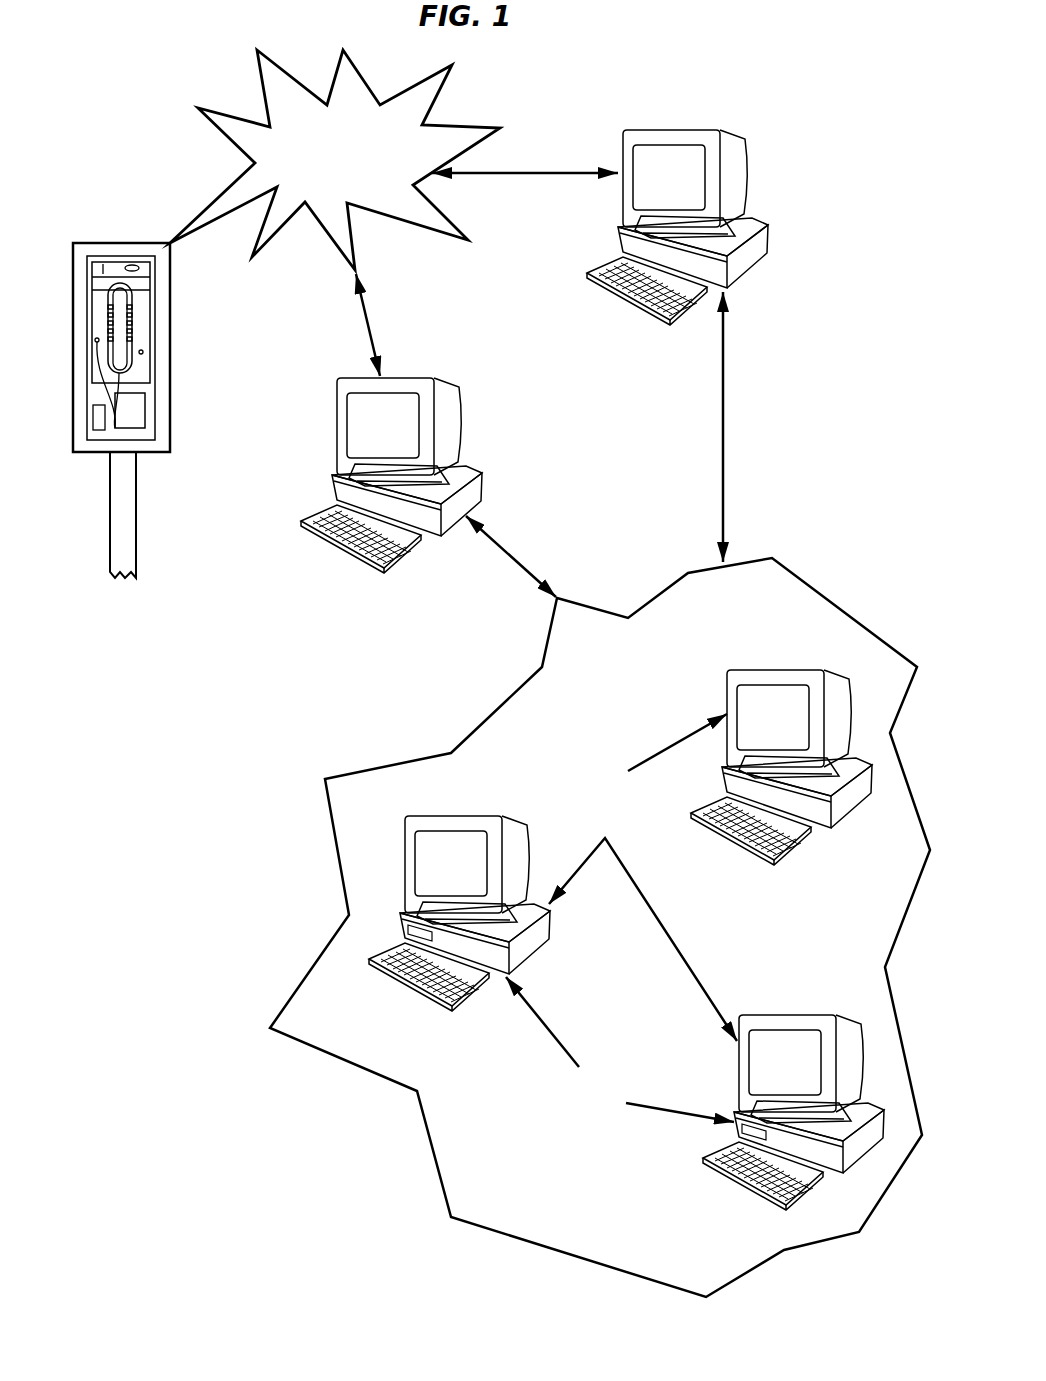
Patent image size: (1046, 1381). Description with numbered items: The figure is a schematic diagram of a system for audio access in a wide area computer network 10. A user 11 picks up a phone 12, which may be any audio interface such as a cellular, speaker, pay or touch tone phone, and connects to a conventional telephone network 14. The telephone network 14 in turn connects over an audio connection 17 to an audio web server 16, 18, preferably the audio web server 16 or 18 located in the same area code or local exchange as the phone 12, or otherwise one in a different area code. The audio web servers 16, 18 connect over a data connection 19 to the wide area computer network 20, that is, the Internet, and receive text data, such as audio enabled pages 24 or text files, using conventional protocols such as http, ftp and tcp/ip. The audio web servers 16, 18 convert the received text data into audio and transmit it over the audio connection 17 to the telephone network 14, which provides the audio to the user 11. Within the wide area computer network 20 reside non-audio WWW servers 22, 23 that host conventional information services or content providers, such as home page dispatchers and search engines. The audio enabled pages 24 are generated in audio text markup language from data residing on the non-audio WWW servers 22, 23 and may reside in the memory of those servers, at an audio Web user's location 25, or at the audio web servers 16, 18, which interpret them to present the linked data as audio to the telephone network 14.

The system for audio access in a wide area computer network 10 is at (112, 115).
The user 11 is at (110, 510).
The phone 12 is at (118, 243).
The telephone network 14 is at (258, 80).
The audio web server 16 is at (744, 148).
The audio connection 17 is at (366, 308).
The audio web server 18 is at (463, 427).
The data connection 19 is at (722, 400).
The wide area computer network 20 is at (399, 763).
The non-audio WWW server 22 is at (441, 814).
The non-audio WWW server 23 is at (787, 668).
The audio enabled pages 24 is at (544, 1024).
The audio Web user's location 25 is at (790, 1015).